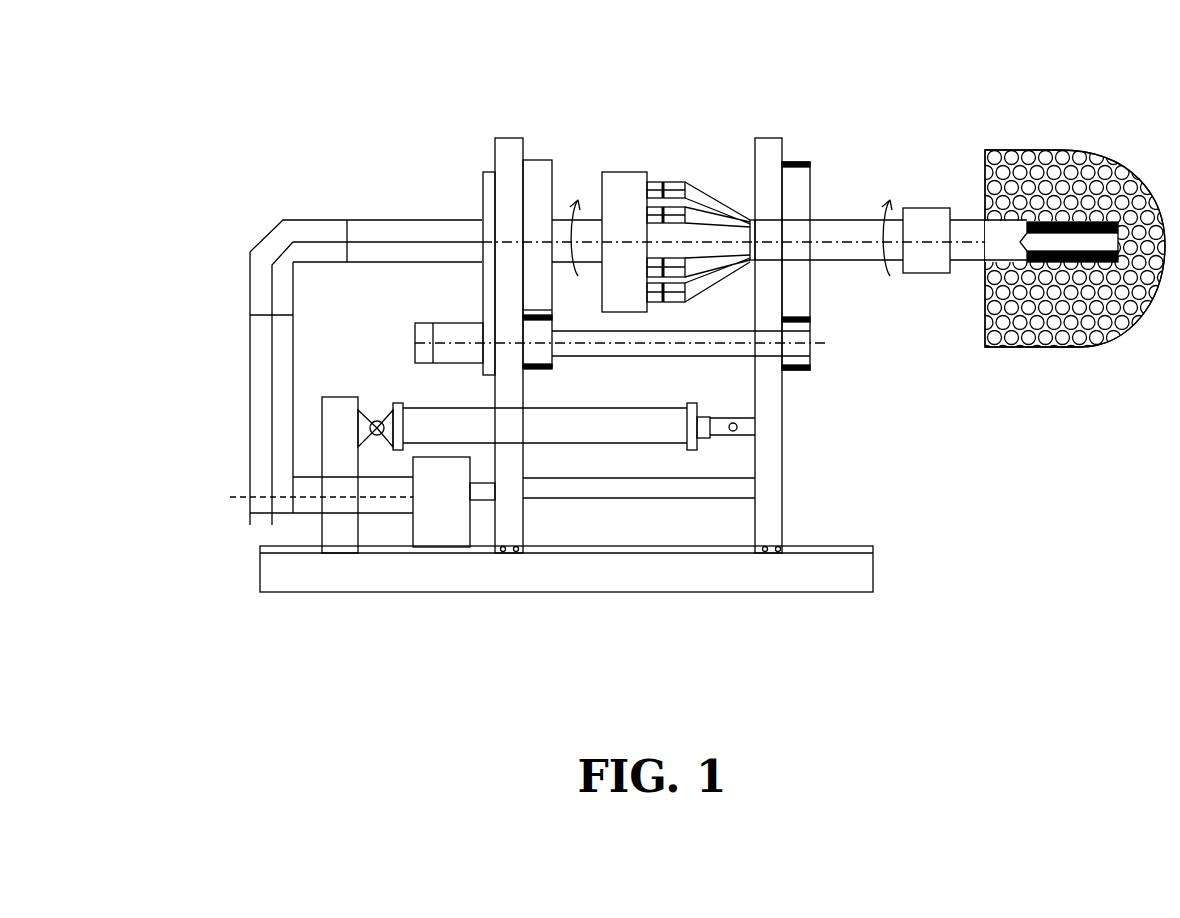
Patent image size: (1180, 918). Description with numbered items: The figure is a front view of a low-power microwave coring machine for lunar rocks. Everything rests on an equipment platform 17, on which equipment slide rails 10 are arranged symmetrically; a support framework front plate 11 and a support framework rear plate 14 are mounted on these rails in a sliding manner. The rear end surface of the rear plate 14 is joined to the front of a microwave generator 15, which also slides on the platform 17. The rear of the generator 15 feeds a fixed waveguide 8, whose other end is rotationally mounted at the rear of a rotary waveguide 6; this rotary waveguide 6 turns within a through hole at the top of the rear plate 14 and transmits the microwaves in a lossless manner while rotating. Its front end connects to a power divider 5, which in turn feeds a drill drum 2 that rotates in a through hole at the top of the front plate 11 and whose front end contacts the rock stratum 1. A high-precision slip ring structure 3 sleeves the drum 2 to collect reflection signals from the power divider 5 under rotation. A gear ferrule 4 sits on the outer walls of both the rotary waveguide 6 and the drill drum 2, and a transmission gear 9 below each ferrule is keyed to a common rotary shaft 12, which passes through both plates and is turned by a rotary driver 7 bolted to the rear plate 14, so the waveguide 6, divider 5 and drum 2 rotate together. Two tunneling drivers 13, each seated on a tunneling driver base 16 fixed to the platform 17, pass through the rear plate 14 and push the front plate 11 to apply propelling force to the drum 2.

The rock stratum 1 is at (1103, 163).
The drill drum 2 is at (1000, 150).
The high-precision slip ring structure 3 is at (925, 208).
The gear ferrule 4 is at (812, 162).
The power divider 5 is at (628, 172).
The rotary waveguide 6 is at (510, 173).
The rotary driver 7 is at (455, 323).
The fixed waveguide 8 is at (270, 357).
The transmission gear 9 is at (810, 370).
The equipment slide rail 10 is at (832, 550).
The support framework front plate 11 is at (768, 503).
The rotary shaft 12 is at (722, 343).
The tunneling driver 13 is at (617, 432).
The support framework rear plate 14 is at (507, 520).
The microwave generator 15 is at (437, 530).
The tunneling driver base 16 is at (340, 537).
The equipment platform 17 is at (263, 568).